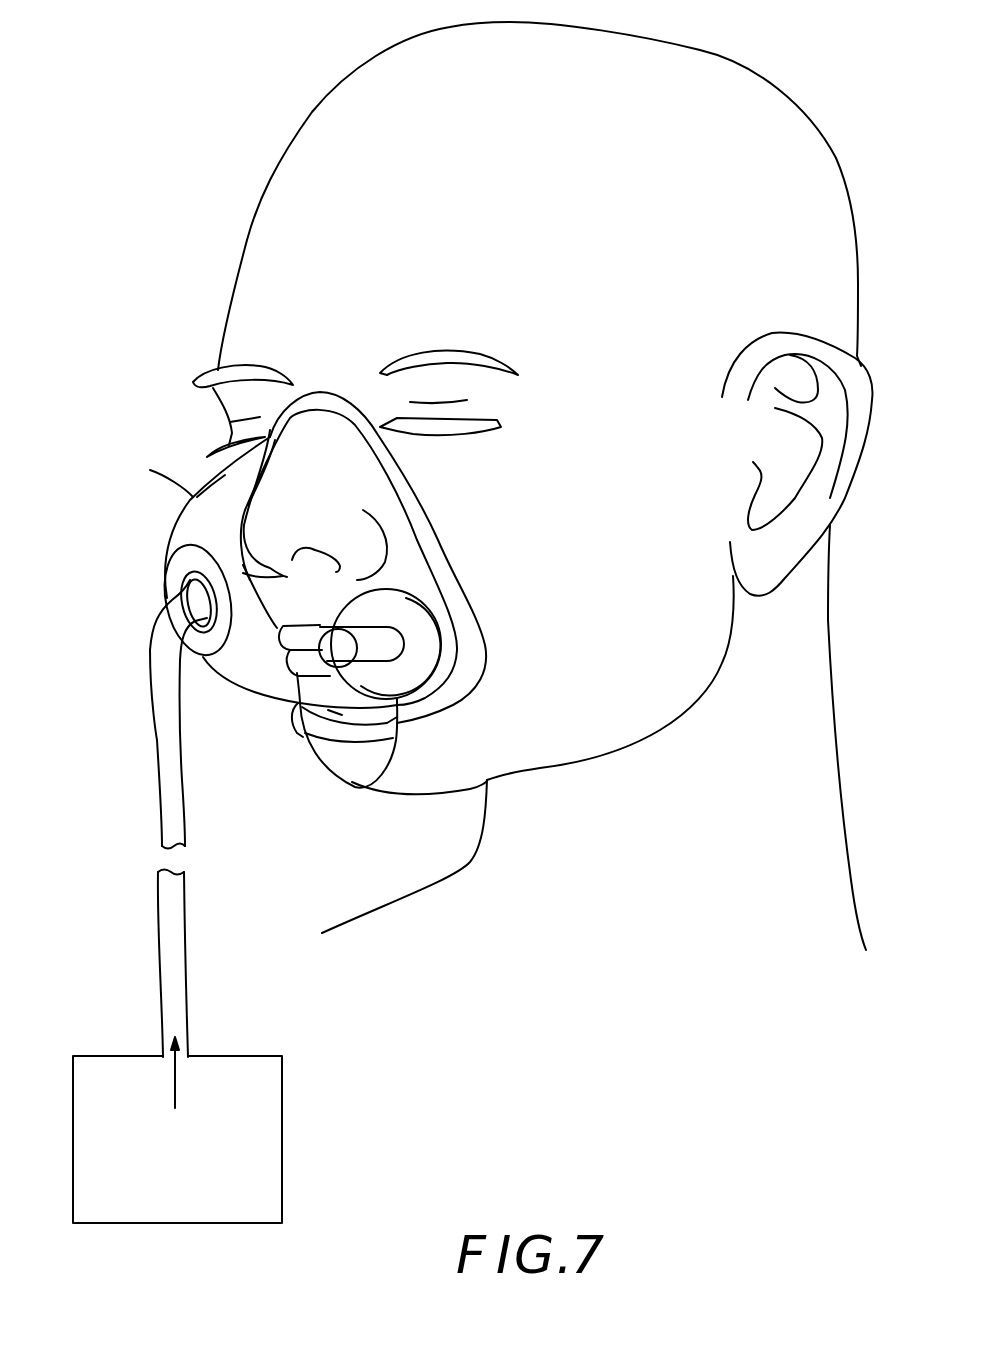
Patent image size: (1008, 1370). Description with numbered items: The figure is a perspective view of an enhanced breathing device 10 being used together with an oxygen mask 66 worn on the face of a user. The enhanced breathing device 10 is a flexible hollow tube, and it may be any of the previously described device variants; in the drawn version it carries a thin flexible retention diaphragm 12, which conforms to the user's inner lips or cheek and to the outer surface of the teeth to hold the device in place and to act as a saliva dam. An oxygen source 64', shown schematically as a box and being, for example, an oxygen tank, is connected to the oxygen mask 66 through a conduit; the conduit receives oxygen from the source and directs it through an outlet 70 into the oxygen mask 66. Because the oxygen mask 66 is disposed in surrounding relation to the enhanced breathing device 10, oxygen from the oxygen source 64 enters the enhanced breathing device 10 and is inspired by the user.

The enhanced breathing device 10 is at (352, 782).
The retention diaphragm 12 is at (442, 638).
The oxygen source 64 is at (127, 818).
The oxygen source 64' is at (279, 1130).
The oxygen mask 66 is at (197, 497).
The outlet 70 is at (160, 608).